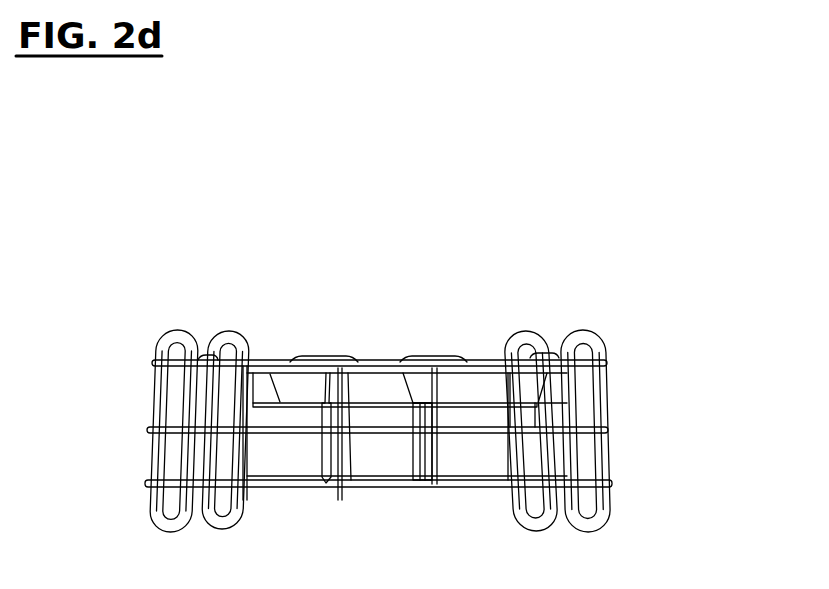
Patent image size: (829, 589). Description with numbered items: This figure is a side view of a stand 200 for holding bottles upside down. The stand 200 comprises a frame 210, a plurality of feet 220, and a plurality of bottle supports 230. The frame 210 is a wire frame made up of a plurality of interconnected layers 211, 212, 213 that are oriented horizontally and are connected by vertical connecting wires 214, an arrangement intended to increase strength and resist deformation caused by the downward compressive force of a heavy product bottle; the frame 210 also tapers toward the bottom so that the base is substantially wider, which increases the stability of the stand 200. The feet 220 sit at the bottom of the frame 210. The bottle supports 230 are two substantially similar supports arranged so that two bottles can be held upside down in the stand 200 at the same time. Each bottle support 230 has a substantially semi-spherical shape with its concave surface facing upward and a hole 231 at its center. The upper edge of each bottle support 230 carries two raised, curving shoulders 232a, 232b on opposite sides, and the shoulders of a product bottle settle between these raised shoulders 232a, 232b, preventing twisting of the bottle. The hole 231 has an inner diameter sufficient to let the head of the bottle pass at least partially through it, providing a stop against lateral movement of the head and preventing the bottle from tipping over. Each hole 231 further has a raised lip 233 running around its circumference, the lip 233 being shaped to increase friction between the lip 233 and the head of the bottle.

The stand 200 is at (165, 168).
The frame 210 is at (618, 400).
The interconnected layer 211 is at (153, 367).
The interconnected layer 212 is at (148, 431).
The interconnected layer 213 is at (148, 483).
The vertical connecting wire 214 is at (344, 453).
The foot 220 is at (157, 530).
The bottle support 230 is at (283, 380).
The hole 231 is at (262, 408).
The raised curving shoulder 232a is at (417, 356).
The raised curving shoulder 232b is at (548, 357).
The raised lip 233 is at (412, 428).